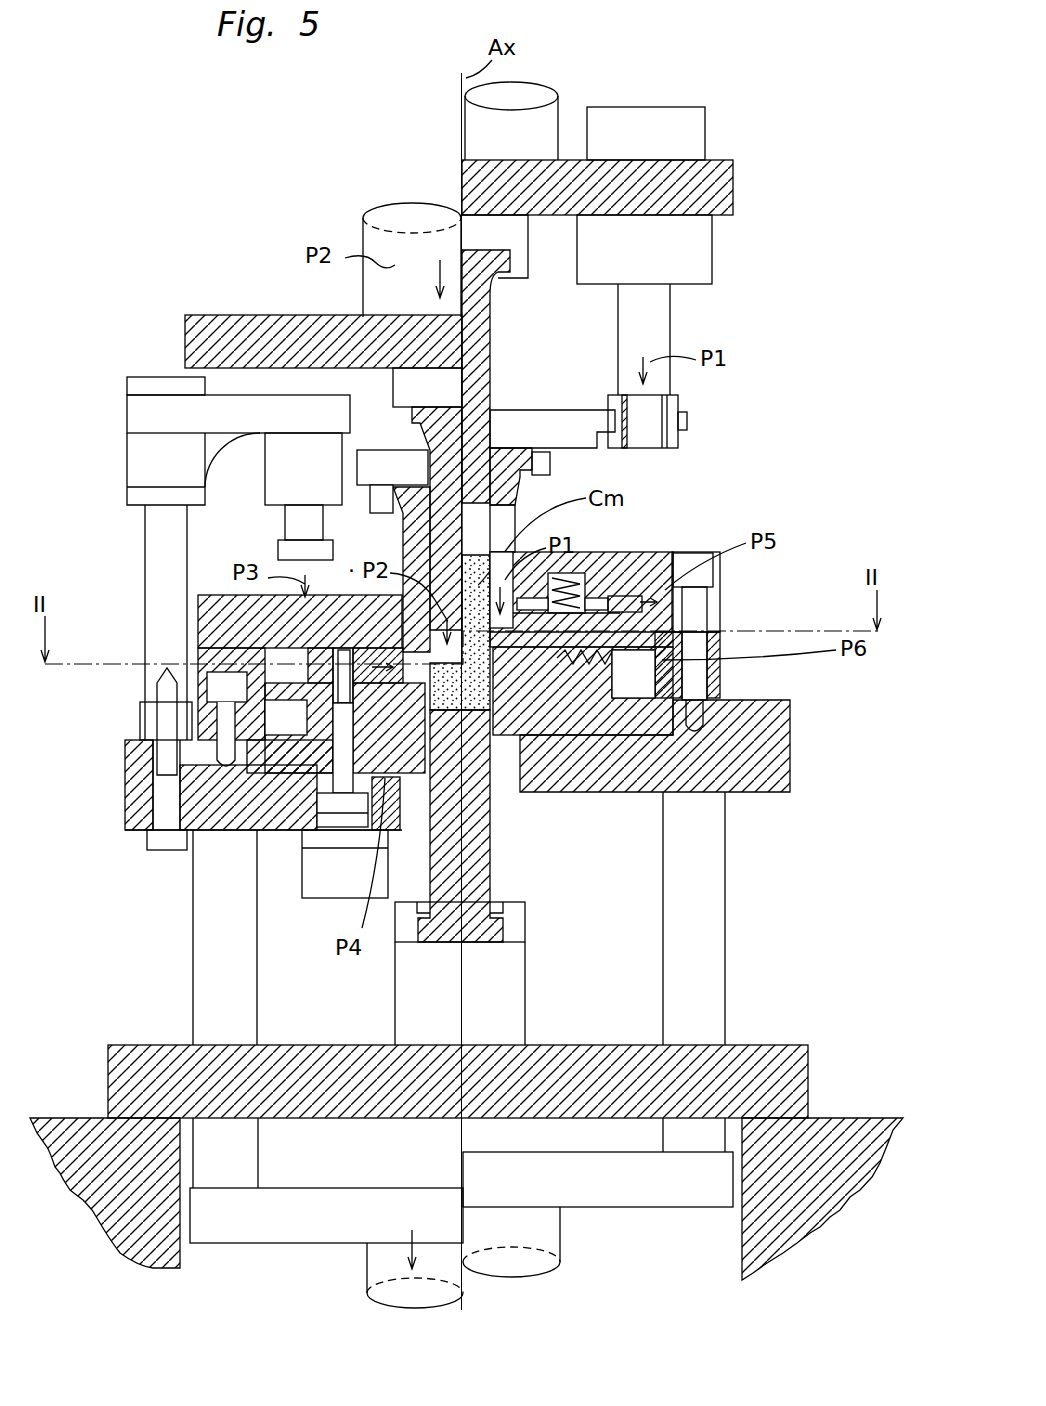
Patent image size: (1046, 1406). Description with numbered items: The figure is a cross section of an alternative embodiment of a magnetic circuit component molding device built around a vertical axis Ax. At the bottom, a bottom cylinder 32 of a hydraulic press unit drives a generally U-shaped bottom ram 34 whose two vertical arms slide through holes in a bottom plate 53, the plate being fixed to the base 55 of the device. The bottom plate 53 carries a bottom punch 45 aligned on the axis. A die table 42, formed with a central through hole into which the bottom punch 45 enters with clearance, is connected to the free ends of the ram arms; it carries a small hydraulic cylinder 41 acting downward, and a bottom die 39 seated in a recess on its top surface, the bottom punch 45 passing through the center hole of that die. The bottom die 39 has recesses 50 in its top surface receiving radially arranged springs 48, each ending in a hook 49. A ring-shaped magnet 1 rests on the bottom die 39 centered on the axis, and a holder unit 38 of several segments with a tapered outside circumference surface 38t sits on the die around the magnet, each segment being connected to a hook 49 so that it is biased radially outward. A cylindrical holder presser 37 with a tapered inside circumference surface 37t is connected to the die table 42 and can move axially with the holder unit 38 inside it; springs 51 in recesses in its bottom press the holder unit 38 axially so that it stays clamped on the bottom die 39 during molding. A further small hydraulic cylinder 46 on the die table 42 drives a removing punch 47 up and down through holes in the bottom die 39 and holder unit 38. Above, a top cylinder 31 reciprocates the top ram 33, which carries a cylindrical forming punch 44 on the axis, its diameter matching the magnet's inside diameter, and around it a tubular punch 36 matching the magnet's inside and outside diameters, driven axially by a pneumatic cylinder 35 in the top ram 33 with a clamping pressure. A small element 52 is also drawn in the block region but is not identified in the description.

The ring-shaped magnet 1 is at (520, 655).
The top cylinder 31 is at (545, 110).
The bottom cylinder 32 is at (553, 1236).
The top ram 33 is at (733, 173).
The bottom ram 34 is at (645, 1195).
The pneumatic cylinder 35 is at (705, 270).
The tubular punch 36 is at (520, 495).
The holder presser 37 is at (612, 610).
The tapered inside circumference surface 37t is at (630, 612).
The holder unit 38 is at (612, 636).
The tapered outside circumference surface 38t is at (330, 666).
The bottom die 39 is at (592, 740).
The small hydraulic cylinder 41 is at (272, 495).
The die table 42 is at (748, 790).
The forming punch 44 is at (480, 356).
The bottom punch 45 is at (492, 878).
The small hydraulic cylinder 46 is at (320, 892).
The removing punch 47 is at (340, 778).
The springs 48 is at (720, 682).
The hook 49 is at (665, 655).
The recesses 50 is at (665, 750).
The springs 51 is at (625, 595).
The spring valve 52 is at (570, 580).
The bottom plate 53 is at (808, 1045).
The base 55 is at (865, 1118).